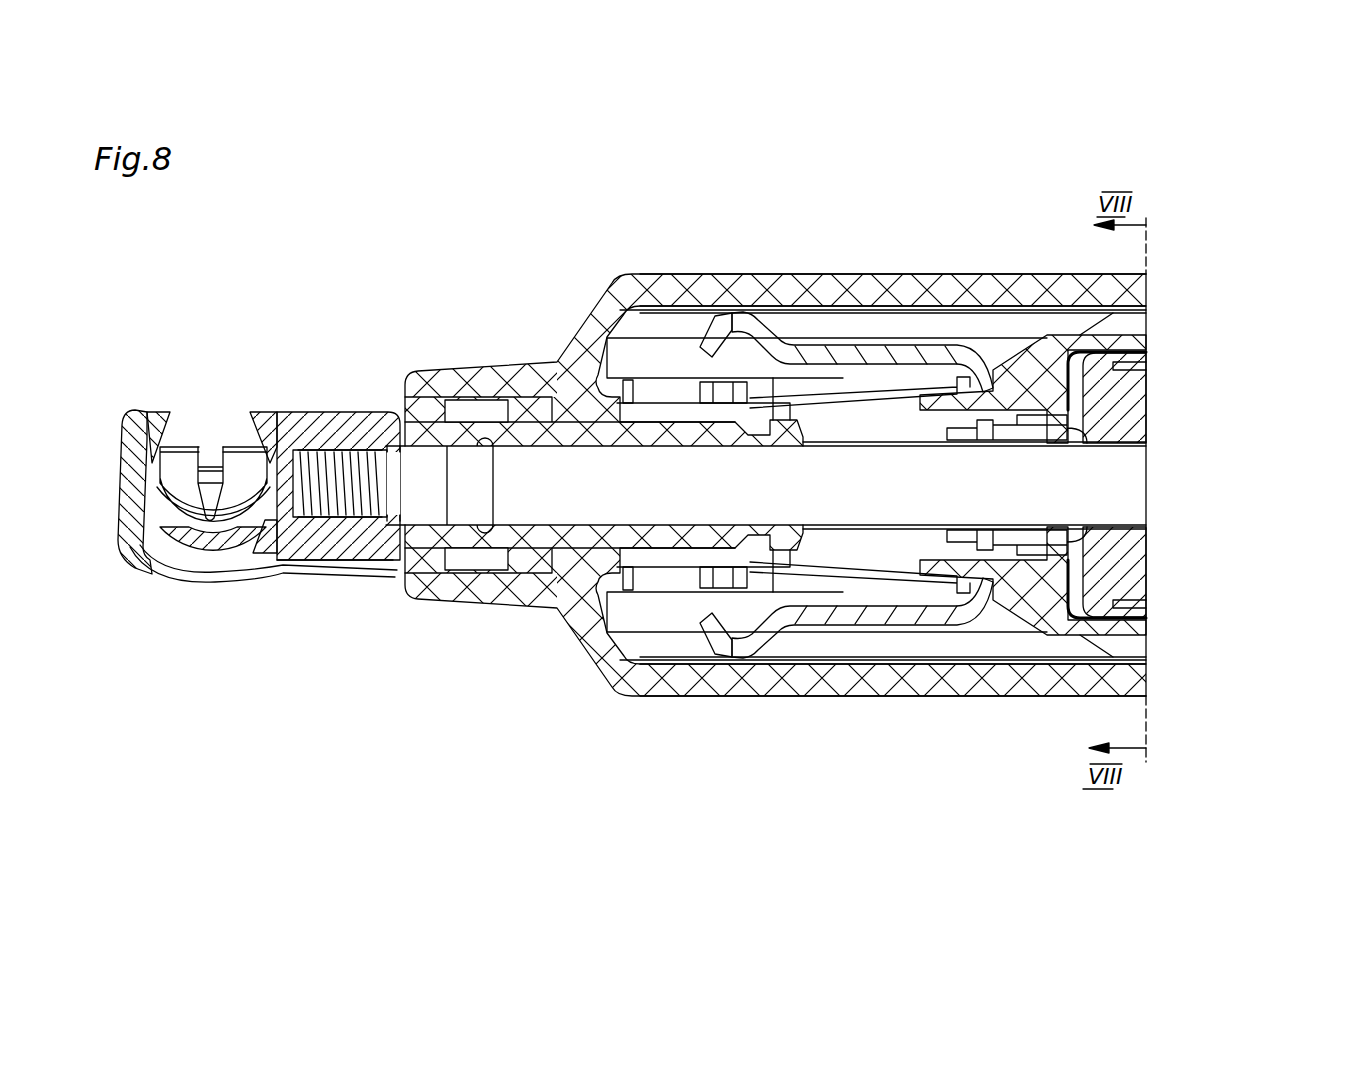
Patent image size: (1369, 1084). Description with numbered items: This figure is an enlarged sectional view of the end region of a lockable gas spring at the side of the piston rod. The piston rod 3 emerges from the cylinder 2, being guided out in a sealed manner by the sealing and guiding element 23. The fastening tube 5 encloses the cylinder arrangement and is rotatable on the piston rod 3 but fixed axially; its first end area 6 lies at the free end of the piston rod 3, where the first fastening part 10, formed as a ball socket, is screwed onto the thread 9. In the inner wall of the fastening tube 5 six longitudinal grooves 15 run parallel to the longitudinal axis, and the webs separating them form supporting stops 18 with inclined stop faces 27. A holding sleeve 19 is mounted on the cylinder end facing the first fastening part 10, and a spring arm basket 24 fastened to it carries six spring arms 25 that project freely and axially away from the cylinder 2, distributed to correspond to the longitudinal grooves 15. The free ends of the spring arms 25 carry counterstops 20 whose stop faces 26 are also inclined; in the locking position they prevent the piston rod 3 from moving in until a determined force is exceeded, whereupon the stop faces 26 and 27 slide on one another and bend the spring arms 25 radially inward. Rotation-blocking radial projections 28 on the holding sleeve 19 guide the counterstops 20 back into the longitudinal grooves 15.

The cylinder 2 is at (1137, 353).
The piston rod 3 is at (543, 500).
The fastening tube 5 is at (995, 272).
The first end area 6 is at (453, 592).
The thread 9 is at (332, 450).
The first fastening part 10 is at (123, 510).
The longitudinal grooves 15 is at (870, 323).
The supporting stops 18 is at (1110, 652).
The holding sleeve 19 is at (1057, 622).
The counterstops 20 is at (737, 315).
The sealing and guiding element 23 is at (1122, 575).
The spring arm basket 24 is at (962, 633).
The spring arms 25 is at (835, 355).
The stop faces 26 is at (708, 333).
The stop faces 27 is at (893, 485).
The rotation-blocking radial projections 28 is at (1125, 323).